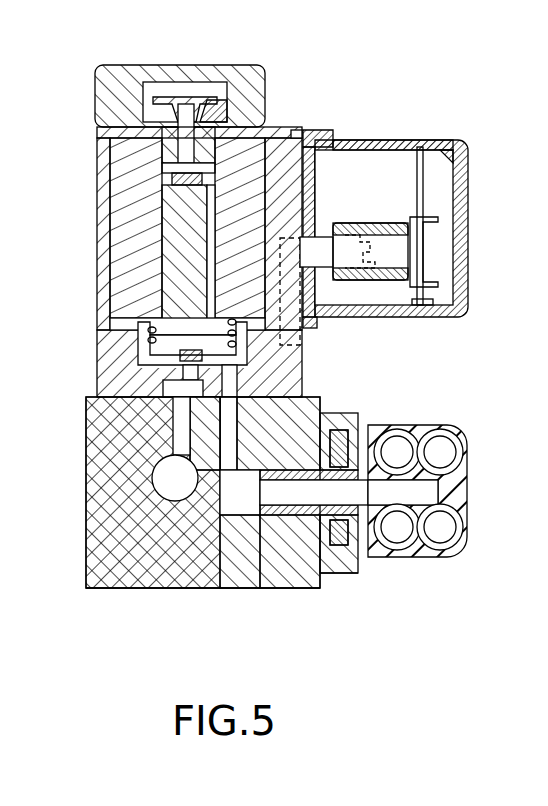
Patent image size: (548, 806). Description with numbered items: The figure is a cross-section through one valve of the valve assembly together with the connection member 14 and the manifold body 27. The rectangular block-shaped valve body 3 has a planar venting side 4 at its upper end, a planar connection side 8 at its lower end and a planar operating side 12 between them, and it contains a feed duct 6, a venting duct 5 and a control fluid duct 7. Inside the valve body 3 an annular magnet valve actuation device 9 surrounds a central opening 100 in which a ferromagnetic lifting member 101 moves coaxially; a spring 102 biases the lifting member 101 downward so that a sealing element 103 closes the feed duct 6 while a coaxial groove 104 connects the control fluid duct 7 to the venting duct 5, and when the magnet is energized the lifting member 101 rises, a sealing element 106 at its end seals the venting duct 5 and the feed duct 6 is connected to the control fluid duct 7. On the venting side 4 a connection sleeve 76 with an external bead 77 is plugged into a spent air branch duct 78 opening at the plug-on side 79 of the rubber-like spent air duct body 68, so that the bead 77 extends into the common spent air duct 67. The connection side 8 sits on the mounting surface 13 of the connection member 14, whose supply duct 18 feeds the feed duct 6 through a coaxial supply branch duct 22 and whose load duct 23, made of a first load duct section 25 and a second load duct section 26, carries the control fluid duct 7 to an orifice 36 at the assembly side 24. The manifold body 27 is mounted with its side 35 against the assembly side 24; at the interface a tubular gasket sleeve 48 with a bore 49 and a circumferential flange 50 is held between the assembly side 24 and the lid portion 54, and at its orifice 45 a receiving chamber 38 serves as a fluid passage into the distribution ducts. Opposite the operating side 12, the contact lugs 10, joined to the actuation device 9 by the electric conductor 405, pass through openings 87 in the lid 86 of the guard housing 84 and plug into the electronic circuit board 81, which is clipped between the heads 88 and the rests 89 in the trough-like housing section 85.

The spent air duct body 68 is at (97, 68).
The spent air duct 67 is at (152, 93).
The connection sleeve 76 is at (152, 93).
The external bead 77 is at (212, 112).
The venting duct 5 is at (183, 96).
The spent air branch duct 78 is at (265, 76).
The plug-on side 79 is at (274, 140).
The sealing element 106 is at (272, 145).
The coaxial groove 104 is at (371, 145).
The venting side 4 is at (284, 135).
The operating side 12 is at (337, 140).
The contact lugs 10 is at (450, 140).
The rests 89 is at (462, 143).
The heads 88 is at (357, 238).
The lid 86 is at (385, 225).
The housing section 85 is at (470, 212).
The electronic circuit board 81 is at (424, 253).
The guard housing 84 is at (465, 283).
The valve actuation device 9 is at (132, 170).
The valve body 3 is at (97, 195).
The lifting member 101 is at (165, 217).
The central opening 100 is at (162, 248).
The spring 102 is at (100, 353).
The sealing element 103 is at (100, 396).
The feed duct 6 is at (97, 382).
The mounting surface 13 is at (100, 398).
The connection side 8 is at (87, 463).
The supply branch ducts 22 is at (160, 483).
The supply duct 18 is at (112, 520).
The load ducts 23 is at (115, 590).
The connection member 14 is at (170, 575).
The first load duct section 25 is at (232, 503).
The second load duct section 26 is at (250, 510).
The bore 49 is at (282, 507).
The gasket sleeve 48 is at (318, 500).
The circumferential flange 50 is at (350, 585).
The assembly side 24 is at (332, 505).
The lid portion 54 is at (355, 550).
The manifold body 27 is at (463, 550).
The orifice 36 is at (236, 475).
The openings 87 is at (310, 320).
The spacer 405 is at (314, 335).
The control fluid duct 7 is at (305, 388).
The manifold body side 35 is at (383, 412).
The orifice 45 is at (365, 413).
The receiving chamber 38 is at (387, 422).